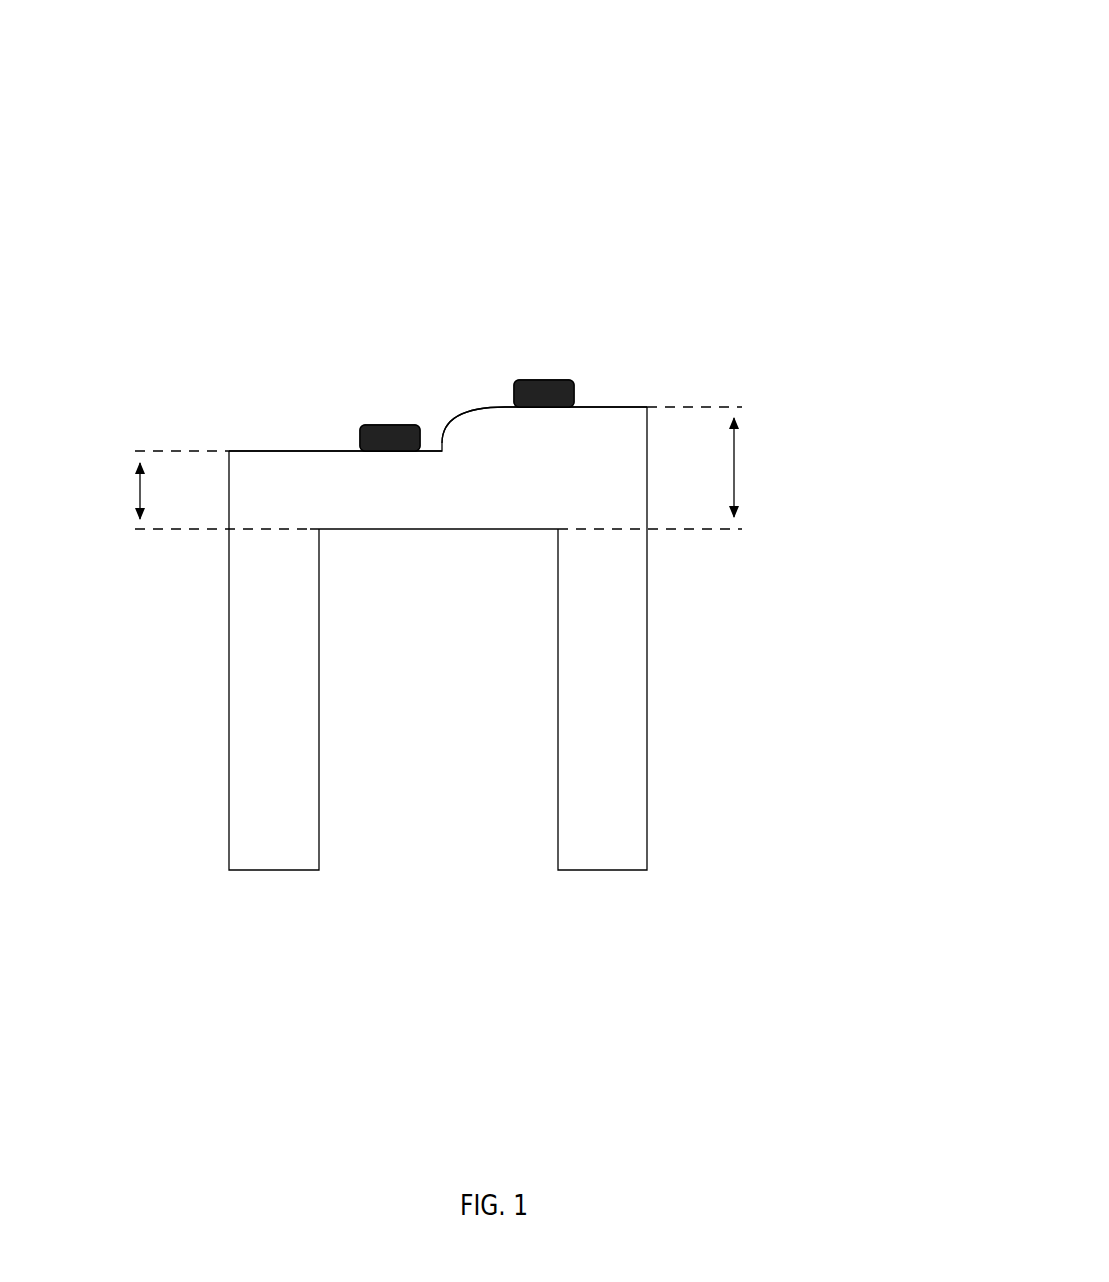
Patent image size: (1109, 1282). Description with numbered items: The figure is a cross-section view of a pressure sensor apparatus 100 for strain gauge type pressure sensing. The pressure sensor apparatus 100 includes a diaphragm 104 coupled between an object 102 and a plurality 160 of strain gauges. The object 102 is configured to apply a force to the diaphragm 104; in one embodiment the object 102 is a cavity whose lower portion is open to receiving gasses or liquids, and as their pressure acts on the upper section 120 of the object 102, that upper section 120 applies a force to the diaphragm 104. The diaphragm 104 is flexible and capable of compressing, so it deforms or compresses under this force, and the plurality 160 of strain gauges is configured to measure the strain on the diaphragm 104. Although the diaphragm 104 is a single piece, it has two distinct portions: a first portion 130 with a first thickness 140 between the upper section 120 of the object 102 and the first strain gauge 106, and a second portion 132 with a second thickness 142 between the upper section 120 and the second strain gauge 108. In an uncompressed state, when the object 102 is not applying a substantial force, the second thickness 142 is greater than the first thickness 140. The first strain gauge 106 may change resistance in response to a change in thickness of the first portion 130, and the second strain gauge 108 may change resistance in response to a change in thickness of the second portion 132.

The pressure sensor apparatus 100 is at (812, 108).
The object 102 is at (446, 703).
The diaphragm 104 is at (292, 468).
The first strain gauge 106 is at (388, 411).
The second strain gauge 108 is at (543, 371).
The upper section of the object 120 is at (445, 537).
The first portion of the diaphragm 130 is at (497, 457).
The second portion of the diaphragm 132 is at (385, 501).
The first thickness 140 is at (140, 491).
The second thickness 142 is at (734, 465).
The plurality of strain gauges 160 is at (440, 311).